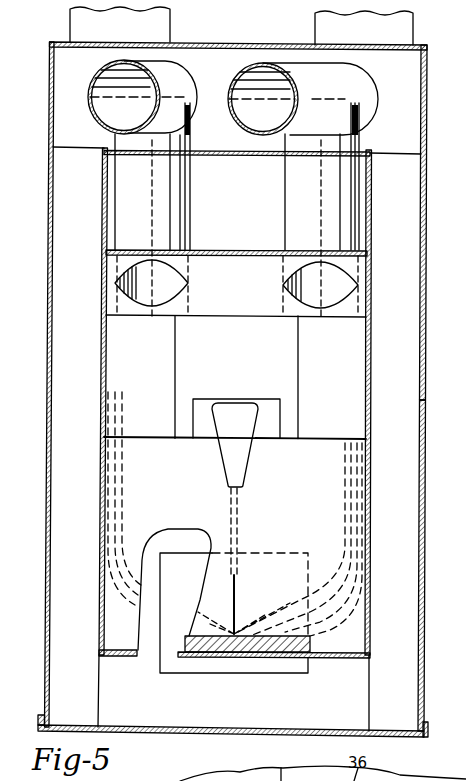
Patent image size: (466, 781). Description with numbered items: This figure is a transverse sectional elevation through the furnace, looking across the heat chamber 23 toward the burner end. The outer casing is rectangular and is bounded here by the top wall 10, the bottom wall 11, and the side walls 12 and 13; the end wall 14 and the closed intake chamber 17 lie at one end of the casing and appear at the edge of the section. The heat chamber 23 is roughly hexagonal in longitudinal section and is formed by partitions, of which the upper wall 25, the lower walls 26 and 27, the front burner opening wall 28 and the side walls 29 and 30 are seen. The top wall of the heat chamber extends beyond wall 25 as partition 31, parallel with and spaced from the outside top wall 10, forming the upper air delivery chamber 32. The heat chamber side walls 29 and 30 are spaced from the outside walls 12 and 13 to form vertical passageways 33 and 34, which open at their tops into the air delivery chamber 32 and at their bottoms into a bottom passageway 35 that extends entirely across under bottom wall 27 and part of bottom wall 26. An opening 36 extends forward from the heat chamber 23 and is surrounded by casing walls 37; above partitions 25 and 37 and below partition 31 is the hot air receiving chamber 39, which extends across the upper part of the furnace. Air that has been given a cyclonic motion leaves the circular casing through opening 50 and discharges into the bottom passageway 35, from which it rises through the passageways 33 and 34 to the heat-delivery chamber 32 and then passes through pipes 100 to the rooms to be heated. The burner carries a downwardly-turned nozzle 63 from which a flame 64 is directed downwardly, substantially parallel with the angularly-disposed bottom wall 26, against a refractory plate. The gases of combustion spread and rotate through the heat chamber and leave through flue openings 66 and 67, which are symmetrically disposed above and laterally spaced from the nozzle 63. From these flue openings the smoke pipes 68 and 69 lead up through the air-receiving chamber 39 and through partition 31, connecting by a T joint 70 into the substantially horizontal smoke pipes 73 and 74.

The top wall 10 is at (243, 44).
The bottom wall 11 is at (155, 732).
The side wall 12 is at (50, 413).
The side wall 13 is at (421, 363).
The end wall 14 is at (465, 408).
The intake chamber 17 is at (465, 678).
The heat chamber 23 is at (235, 555).
The partition 25 is at (243, 243).
The partition 26 is at (147, 453).
The partition 27 is at (325, 657).
The partition 28 is at (158, 378).
The partition 29 is at (102, 465).
The partition 30 is at (368, 450).
The partition 31 is at (238, 157).
The upper air delivery chamber 32 is at (202, 70).
The vertical passageway 33 is at (83, 352).
The vertical passageway 34 is at (403, 492).
The bottom passageway 35 is at (205, 713).
The opening 36 is at (217, 328).
The casing wall 37 is at (176, 337).
The hot air receiving chamber 39 is at (266, 193).
The opening 50 is at (168, 605).
The nozzle 63 is at (242, 468).
The flame 64 is at (233, 538).
The flue opening 66 is at (136, 280).
The flue opening 67 is at (343, 287).
The smoke pipe 68 is at (137, 205).
The smoke pipe 69 is at (348, 215).
The T joint 70 is at (186, 133).
The smoke pipe 73 is at (272, 63).
The smoke pipe 74 is at (93, 80).
The pipe 100 is at (80, 23).